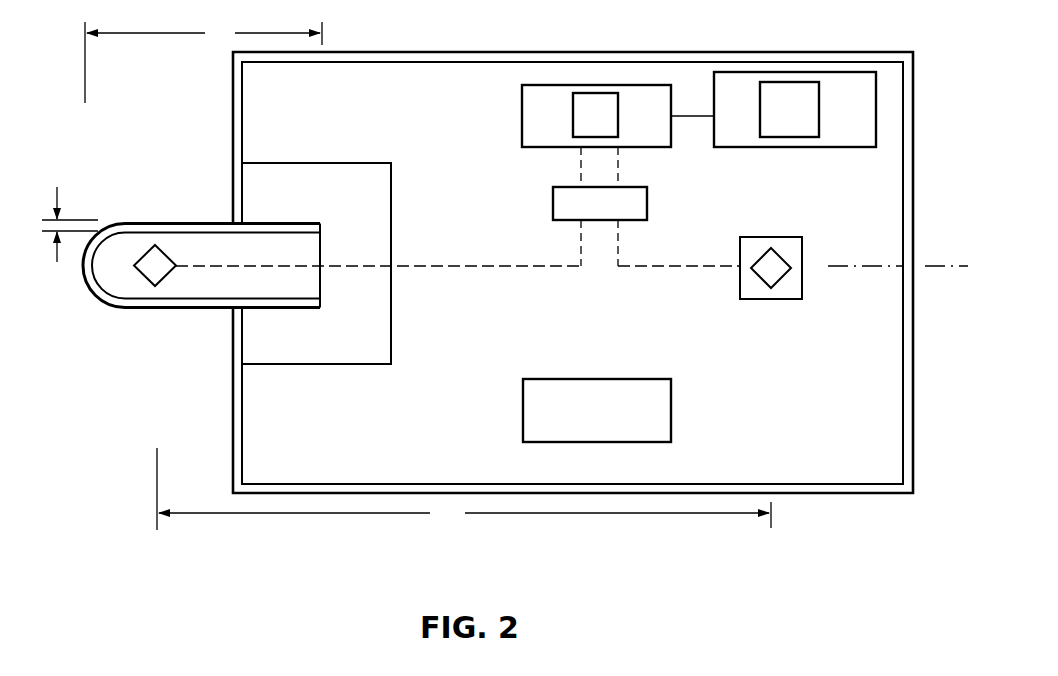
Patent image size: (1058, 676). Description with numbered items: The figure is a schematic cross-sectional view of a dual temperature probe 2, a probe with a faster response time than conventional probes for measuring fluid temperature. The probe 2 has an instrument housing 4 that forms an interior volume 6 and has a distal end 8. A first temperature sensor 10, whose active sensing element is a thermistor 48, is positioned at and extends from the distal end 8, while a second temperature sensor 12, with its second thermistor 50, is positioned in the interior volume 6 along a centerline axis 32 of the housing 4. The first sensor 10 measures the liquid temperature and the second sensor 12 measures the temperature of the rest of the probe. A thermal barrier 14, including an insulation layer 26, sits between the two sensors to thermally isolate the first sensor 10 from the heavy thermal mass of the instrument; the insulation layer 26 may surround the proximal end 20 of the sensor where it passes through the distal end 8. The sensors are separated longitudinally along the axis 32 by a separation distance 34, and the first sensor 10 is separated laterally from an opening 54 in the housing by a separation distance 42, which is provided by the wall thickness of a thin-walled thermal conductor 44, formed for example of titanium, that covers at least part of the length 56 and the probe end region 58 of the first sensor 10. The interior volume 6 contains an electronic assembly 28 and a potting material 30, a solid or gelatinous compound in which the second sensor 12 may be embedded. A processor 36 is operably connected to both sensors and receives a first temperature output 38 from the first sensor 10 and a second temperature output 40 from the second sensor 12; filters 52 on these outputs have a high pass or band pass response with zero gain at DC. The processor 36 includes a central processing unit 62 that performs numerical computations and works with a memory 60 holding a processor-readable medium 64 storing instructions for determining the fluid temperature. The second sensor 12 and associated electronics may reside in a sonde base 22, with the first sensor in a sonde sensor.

The temperature probe 2 is at (853, 50).
The instrument housing 4 is at (727, 52).
The interior volume 6 is at (436, 86).
The distal end 8 is at (230, 76).
The first temperature sensor 10 is at (140, 295).
The second temperature sensor 12 is at (789, 240).
The thermal barrier 14 is at (292, 163).
The proximal end 20 is at (240, 387).
The sonde base 22 is at (795, 503).
The insulation layer 26 is at (287, 209).
The electronic assembly 28 is at (572, 379).
The potting material 30 is at (449, 135).
The centerline axis 32 is at (948, 264).
The separation distance 34 is at (464, 489).
The processor 36 is at (522, 126).
The first temperature output 38 is at (514, 258).
The second temperature output 40 is at (684, 272).
The separation distance 42 is at (60, 200).
The thin-walled thermal conductor 44 is at (190, 308).
The thermistor 48 is at (162, 244).
The second thermistor 50 is at (762, 284).
The filters 52 is at (553, 205).
The opening 54 is at (228, 250).
The length 56 is at (203, 62).
The probe end region 58 is at (88, 270).
The memory 60 is at (826, 148).
The central processing unit 62 is at (618, 118).
The processor-readable medium 64 is at (760, 120).